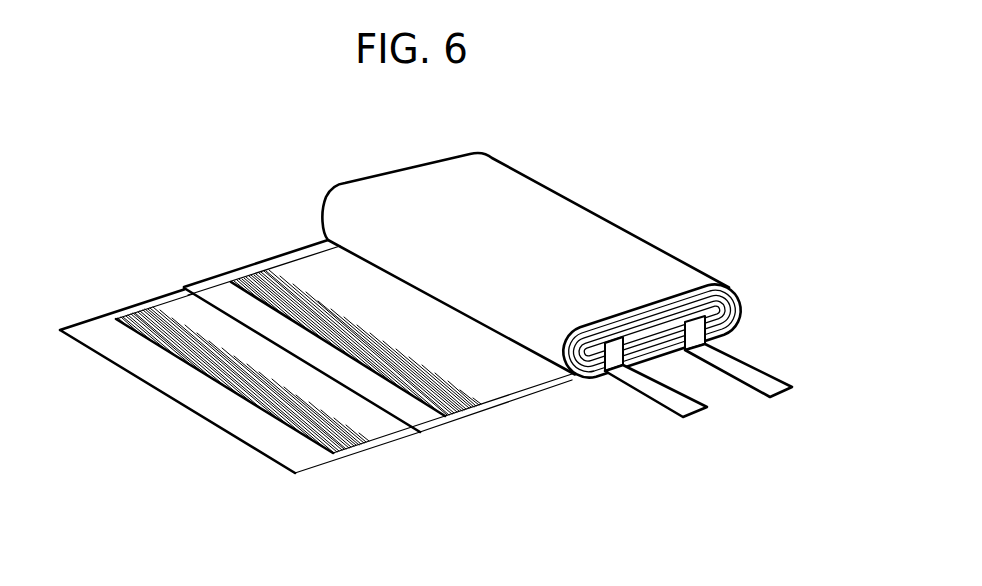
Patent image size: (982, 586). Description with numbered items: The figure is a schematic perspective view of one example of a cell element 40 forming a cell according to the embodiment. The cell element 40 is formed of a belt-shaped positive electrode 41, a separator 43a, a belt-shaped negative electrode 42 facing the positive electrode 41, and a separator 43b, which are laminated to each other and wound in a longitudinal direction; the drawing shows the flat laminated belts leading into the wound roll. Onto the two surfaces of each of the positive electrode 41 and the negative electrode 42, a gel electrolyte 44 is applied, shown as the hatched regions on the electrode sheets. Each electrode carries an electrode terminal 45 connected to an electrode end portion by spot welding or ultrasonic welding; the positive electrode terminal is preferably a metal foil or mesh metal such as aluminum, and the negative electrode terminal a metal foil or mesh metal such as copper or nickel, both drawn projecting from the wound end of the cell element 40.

The cell element 40 is at (523, 176).
The positive electrode 41 is at (507, 400).
The negative electrode 42 is at (363, 447).
The separator 43a is at (422, 416).
The separator 43b is at (305, 461).
The gel electrolyte 44 is at (126, 318).
The electrode terminal 45 is at (703, 418).